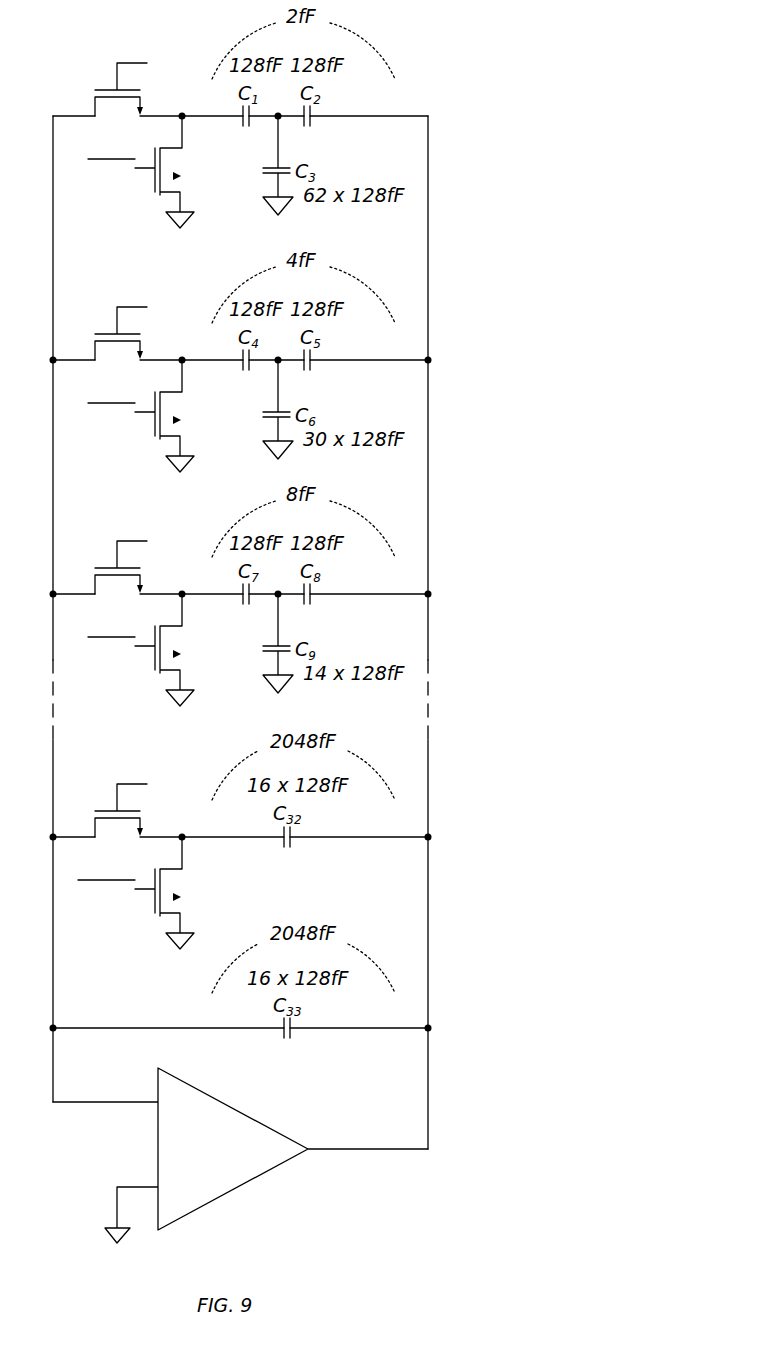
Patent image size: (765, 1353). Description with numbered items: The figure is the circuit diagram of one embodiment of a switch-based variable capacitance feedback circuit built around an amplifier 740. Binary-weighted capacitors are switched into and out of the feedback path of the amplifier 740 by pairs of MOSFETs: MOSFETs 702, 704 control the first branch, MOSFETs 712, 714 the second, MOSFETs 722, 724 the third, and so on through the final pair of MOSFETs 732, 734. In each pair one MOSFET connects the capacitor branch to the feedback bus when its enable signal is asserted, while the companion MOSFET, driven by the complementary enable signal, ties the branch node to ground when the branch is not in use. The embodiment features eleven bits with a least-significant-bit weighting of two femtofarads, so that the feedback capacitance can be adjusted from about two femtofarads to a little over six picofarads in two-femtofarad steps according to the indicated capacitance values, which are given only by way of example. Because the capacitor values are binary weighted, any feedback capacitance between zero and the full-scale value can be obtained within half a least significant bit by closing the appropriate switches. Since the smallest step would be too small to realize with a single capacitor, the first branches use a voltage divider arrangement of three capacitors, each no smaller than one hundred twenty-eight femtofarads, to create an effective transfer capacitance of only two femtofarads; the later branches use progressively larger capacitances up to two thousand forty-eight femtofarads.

The MOSFET 702 is at (106, 88).
The MOSFET 704 is at (162, 196).
The MOSFET 712 is at (106, 332).
The MOSFET 714 is at (162, 440).
The MOSFET 722 is at (106, 566).
The MOSFET 724 is at (162, 674).
The MOSFET 732 is at (106, 809).
The MOSFET 734 is at (162, 917).
The amplifier 740 is at (231, 1107).